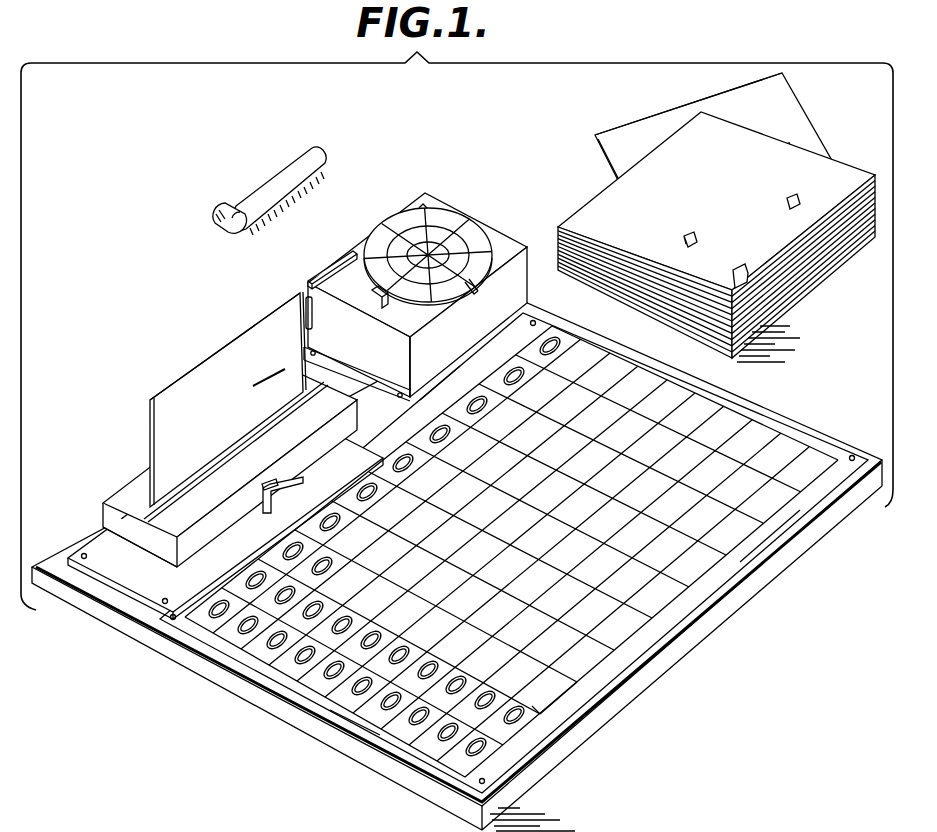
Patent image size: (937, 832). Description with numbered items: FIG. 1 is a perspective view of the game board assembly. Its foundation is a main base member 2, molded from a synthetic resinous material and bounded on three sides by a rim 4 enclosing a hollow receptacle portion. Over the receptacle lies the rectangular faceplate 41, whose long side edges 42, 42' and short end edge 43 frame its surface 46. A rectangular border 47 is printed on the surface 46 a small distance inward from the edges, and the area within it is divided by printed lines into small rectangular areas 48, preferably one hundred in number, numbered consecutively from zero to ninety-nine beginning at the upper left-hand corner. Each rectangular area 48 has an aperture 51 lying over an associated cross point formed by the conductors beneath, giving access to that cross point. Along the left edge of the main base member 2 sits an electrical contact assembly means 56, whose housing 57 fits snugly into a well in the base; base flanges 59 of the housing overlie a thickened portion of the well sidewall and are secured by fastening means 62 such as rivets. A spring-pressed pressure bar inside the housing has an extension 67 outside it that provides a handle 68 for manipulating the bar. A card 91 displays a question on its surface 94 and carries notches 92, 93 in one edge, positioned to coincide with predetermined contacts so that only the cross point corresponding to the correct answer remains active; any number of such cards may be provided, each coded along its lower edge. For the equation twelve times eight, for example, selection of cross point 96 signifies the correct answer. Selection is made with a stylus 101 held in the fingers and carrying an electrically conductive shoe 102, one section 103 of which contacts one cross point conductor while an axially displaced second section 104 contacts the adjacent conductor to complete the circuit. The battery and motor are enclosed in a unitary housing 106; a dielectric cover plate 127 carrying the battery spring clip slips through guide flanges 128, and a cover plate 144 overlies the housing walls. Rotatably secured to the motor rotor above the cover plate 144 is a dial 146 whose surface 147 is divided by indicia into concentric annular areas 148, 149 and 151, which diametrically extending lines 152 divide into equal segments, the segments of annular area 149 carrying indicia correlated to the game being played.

The main base member 2 is at (216, 704).
The rim 4 is at (664, 641).
The grid 41 is at (735, 420).
The long side edge 42 is at (452, 388).
The long side edge 42' is at (640, 692).
The short end edge 43 is at (346, 712).
The surface of the faceplate 46 is at (766, 433).
The rectangular border 47 is at (758, 535).
The small rectangular area 48 is at (560, 505).
The aperture 51 is at (384, 486).
The electrical contact assembly means 56 is at (111, 485).
The housing 57 is at (221, 503).
The base flange 59 is at (146, 579).
The fastening means 62 is at (86, 555).
The extension 67 is at (270, 481).
The handle 68 is at (297, 481).
The card 91 is at (215, 353).
The notch 92 is at (684, 240).
The notch 93 is at (796, 197).
The surface of the card 94 is at (282, 358).
The cross point 96 is at (756, 214).
The stylus 101 is at (277, 170).
The electrically conductive shoe 102 is at (223, 243).
The contact section 103 is at (210, 225).
The second section 104 is at (242, 230).
The unitary housing 106 is at (506, 230).
The dielectric cover plate 127 is at (338, 263).
The guide flanges 128 is at (312, 310).
The cover plate 144 is at (389, 326).
The dial 146 is at (410, 212).
The surface of the dial 147 is at (452, 224).
The annular area 148 is at (483, 247).
The annular area 149 is at (403, 240).
The annular area 151 is at (372, 290).
The diametrically extending lines 152 is at (474, 282).